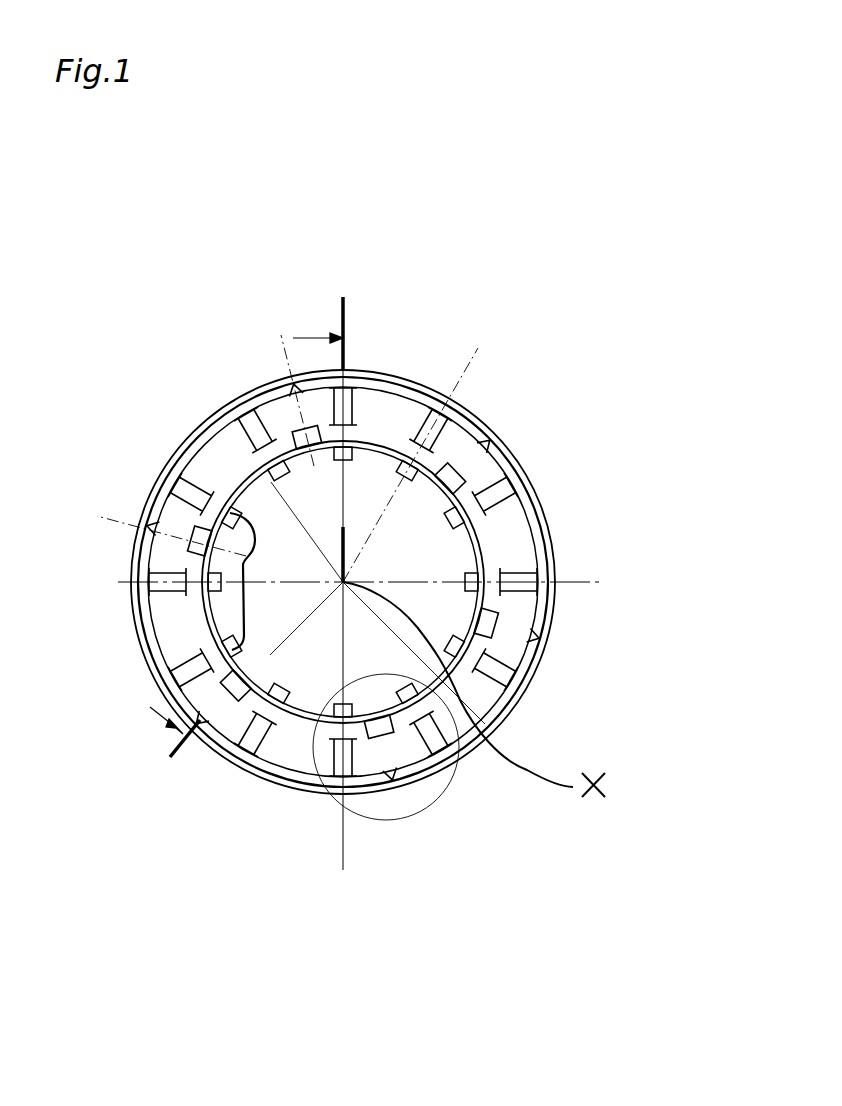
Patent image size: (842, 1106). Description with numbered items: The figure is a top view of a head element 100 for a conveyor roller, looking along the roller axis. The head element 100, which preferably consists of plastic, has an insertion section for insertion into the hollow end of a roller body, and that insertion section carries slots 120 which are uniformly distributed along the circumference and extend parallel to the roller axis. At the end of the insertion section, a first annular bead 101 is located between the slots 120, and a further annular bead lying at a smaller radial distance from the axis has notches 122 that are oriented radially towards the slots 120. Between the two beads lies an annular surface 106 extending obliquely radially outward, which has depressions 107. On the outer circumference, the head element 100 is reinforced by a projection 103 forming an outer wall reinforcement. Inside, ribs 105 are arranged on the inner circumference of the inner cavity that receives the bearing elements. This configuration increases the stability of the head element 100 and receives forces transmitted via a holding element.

The head element 100 is at (603, 246).
The first annular bead 101 is at (540, 530).
The projection 103 is at (527, 698).
The ribs 105 is at (248, 560).
The annular surface 106 is at (385, 417).
The depressions 107 is at (267, 740).
The slots 120 is at (290, 440).
The notches 122 is at (200, 535).